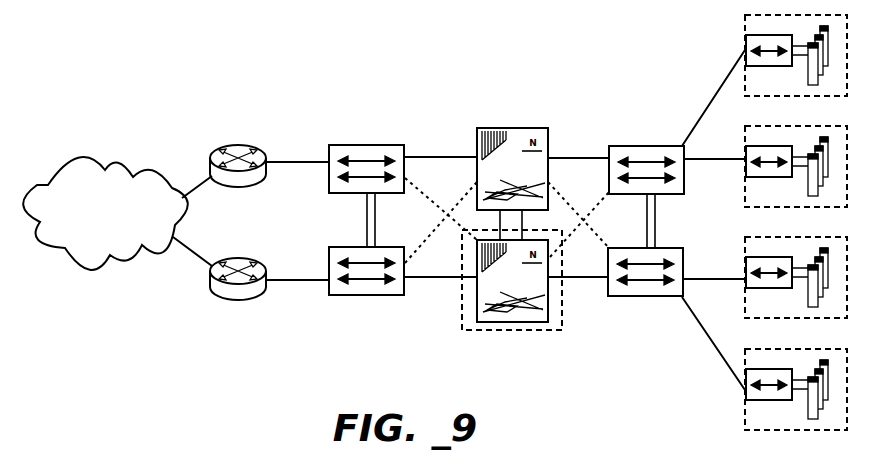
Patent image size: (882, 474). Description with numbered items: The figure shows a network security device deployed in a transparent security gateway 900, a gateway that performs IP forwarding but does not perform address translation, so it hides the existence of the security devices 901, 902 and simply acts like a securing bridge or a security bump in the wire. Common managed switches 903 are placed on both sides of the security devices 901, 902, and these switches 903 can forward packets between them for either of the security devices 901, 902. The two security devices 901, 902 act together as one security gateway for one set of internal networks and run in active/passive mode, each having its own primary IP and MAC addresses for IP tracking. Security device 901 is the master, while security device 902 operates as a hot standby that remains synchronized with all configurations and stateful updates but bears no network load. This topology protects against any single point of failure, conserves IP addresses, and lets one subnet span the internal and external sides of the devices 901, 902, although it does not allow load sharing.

The transparent security gateway 900 is at (372, 78).
The security device 901 is at (490, 128).
The security device 902 is at (492, 332).
The managed switch 903 is at (345, 295).